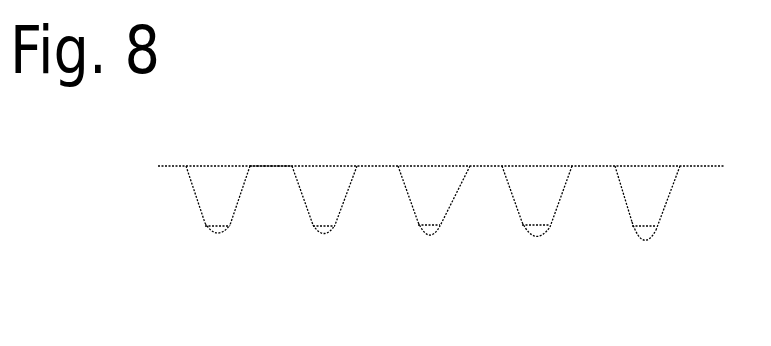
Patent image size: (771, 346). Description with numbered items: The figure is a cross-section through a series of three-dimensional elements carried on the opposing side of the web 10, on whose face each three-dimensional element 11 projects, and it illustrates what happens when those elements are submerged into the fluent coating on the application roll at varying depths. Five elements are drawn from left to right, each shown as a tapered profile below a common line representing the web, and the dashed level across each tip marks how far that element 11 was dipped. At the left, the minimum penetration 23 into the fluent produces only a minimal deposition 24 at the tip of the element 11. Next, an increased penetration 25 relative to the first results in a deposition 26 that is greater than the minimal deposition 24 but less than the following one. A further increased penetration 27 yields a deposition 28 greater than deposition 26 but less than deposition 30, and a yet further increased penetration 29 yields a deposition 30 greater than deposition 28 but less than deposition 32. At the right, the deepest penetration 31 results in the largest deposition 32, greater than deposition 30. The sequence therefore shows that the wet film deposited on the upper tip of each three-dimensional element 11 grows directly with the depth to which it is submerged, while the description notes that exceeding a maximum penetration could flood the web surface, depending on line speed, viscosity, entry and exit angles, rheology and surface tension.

The opposing side of the web 10 is at (588, 165).
The three-dimensional element 11 is at (320, 182).
The minimum penetration 23 is at (200, 222).
The minimal deposition 24 is at (223, 232).
The increased penetration 25 is at (310, 223).
The deposition 26 is at (332, 233).
The further increased penetration 27 is at (415, 222).
The deposition 28 is at (442, 237).
The yet further increased penetration 29 is at (522, 218).
The deposition 30 is at (546, 238).
The deepest penetration 31 is at (627, 217).
The deposition 32 is at (655, 242).